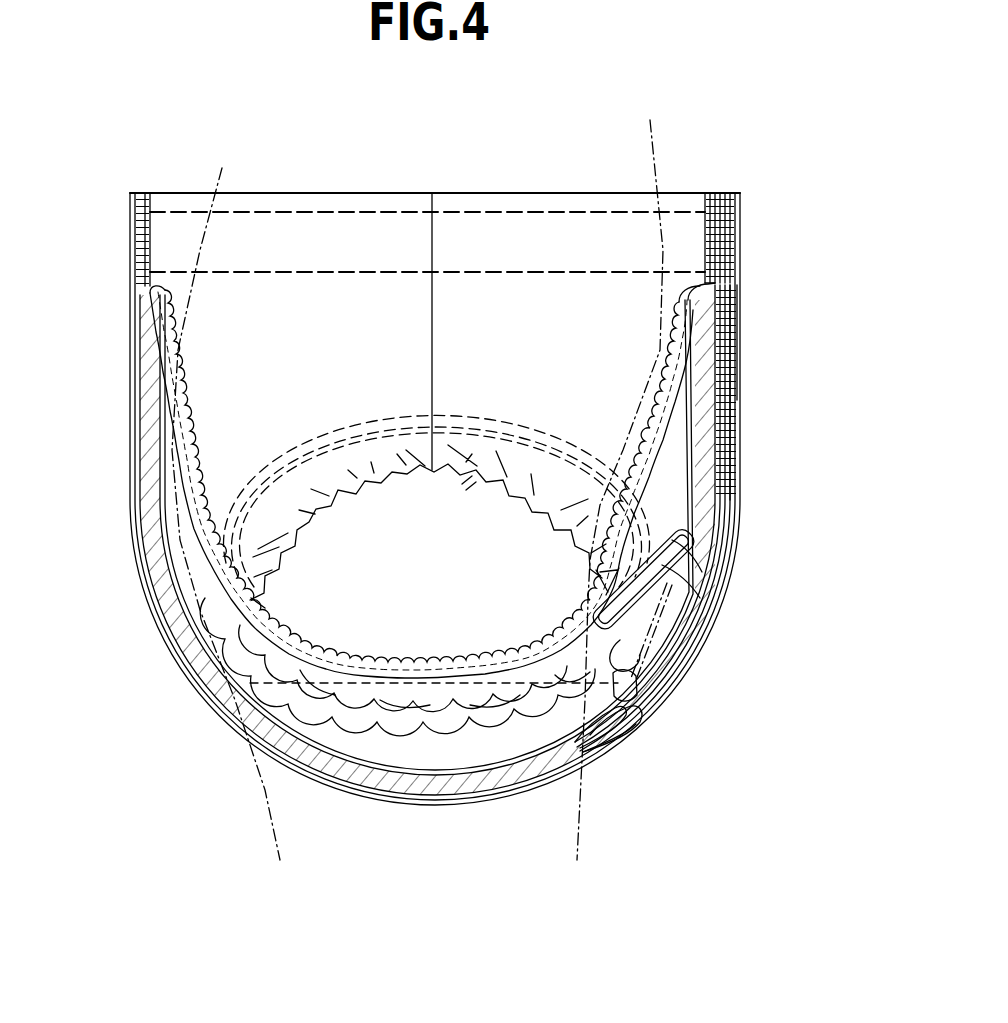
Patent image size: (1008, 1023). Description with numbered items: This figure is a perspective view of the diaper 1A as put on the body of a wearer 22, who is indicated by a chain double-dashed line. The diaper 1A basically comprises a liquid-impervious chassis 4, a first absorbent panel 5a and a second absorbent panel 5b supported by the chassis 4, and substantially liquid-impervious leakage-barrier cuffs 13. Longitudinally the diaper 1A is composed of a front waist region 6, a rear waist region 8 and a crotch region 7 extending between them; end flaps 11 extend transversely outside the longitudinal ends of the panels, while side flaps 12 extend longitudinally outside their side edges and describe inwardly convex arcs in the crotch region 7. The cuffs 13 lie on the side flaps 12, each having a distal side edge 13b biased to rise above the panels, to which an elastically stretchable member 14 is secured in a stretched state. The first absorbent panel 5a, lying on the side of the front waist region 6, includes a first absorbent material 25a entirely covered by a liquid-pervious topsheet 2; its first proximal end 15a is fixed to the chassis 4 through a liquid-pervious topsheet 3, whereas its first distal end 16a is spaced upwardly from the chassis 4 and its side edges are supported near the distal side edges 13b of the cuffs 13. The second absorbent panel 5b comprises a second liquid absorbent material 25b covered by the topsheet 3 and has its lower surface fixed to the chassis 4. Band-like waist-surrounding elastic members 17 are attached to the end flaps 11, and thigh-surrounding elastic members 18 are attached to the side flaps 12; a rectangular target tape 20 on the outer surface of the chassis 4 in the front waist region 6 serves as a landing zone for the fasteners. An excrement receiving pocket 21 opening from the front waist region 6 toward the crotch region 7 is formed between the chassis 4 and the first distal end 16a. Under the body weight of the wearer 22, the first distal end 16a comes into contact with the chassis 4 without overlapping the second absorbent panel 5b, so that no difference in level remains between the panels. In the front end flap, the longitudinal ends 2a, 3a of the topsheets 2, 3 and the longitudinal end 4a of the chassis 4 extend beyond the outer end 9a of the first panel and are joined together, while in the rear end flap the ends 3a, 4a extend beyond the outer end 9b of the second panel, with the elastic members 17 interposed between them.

The diaper 1A is at (812, 492).
The liquid-pervious topsheet 2 is at (668, 548).
The longitudinal end of topsheet 2a is at (710, 217).
The liquid-pervious topsheet 3 is at (407, 765).
The longitudinal end of topsheet 3a is at (148, 215).
The liquid-impervious chassis 4 is at (482, 800).
The longitudinal end of chassis 4a is at (133, 228).
The first absorbent panel 5a is at (690, 572).
The second absorbent panel 5b is at (343, 770).
The front waist region 6 is at (738, 442).
The crotch region 7 is at (450, 806).
The rear waist region 8 is at (131, 480).
The outer end of first absorbent panel 9a is at (703, 300).
The outer end of second absorbent panel 9b is at (148, 301).
The end flaps 11 is at (313, 222).
The side flaps 12 is at (338, 486).
The leakage-barrier cuffs 13 is at (415, 682).
The distal side edge 13b is at (386, 682).
The elastically stretchable member 14 is at (487, 643).
The first proximal end 15a is at (738, 373).
The first distal end 16a is at (597, 578).
The waist-surrounding elastic members 17 is at (487, 215).
The thigh-surrounding elastic members 18 is at (478, 478).
The target tape 20 is at (738, 335).
The excrement receiving pocket 21 is at (645, 705).
The wearer 22 is at (652, 142).
The first absorbent material 25a is at (694, 610).
The second liquid absorbent material 25b is at (247, 725).